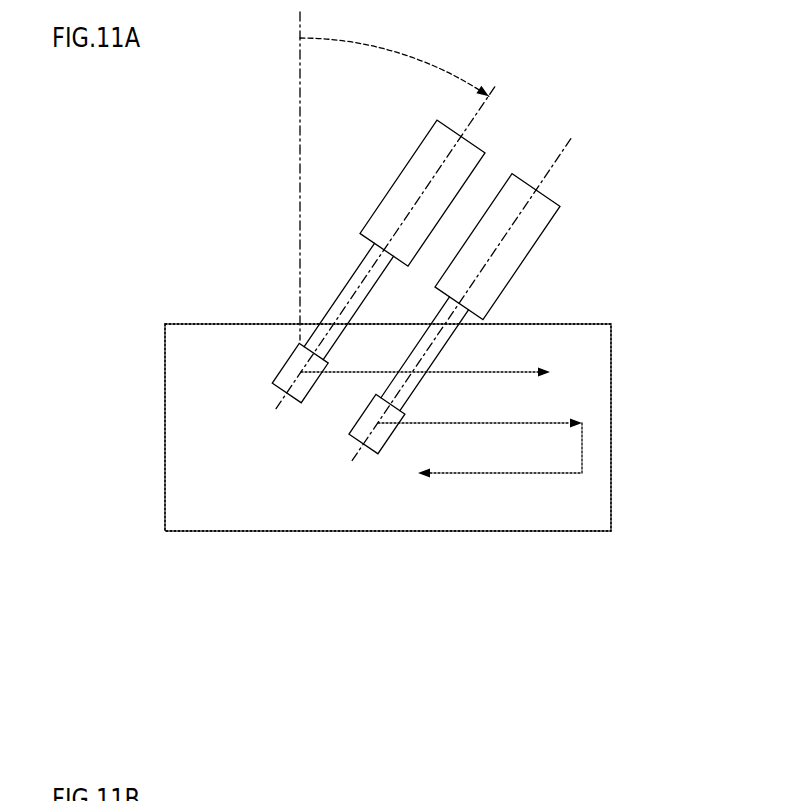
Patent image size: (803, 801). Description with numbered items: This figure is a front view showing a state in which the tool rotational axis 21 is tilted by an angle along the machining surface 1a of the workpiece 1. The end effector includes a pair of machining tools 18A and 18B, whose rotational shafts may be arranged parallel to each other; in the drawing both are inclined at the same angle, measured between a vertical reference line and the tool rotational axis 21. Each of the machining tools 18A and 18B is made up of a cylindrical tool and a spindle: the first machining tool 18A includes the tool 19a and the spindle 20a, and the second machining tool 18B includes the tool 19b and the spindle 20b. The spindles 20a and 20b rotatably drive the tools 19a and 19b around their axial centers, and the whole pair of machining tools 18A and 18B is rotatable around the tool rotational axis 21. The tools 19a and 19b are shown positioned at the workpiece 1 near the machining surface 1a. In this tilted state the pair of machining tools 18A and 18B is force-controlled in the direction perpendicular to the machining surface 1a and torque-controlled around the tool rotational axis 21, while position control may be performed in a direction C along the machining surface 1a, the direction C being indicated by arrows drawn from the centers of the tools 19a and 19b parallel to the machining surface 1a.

The workpiece 1 is at (600, 508).
The machining surface 1a is at (255, 497).
The machining tool 18A is at (340, 233).
The machining tool 18B is at (503, 340).
The tool 19a is at (270, 373).
The tool 19b is at (375, 452).
The spindle 20a is at (393, 207).
The spindle 20b is at (507, 252).
The tool rotational axis 21 is at (482, 107).
The direction C is at (552, 373).